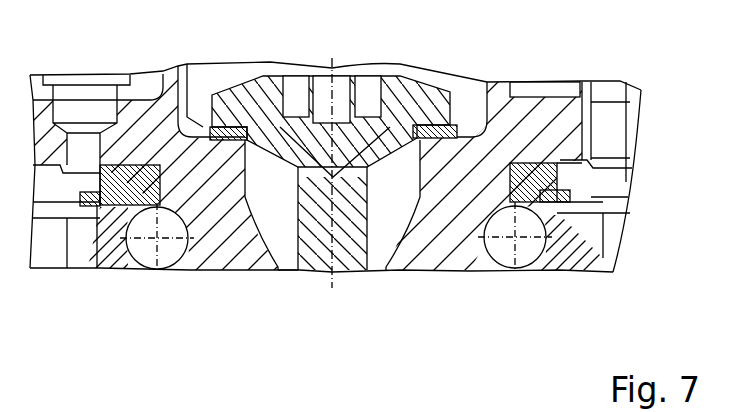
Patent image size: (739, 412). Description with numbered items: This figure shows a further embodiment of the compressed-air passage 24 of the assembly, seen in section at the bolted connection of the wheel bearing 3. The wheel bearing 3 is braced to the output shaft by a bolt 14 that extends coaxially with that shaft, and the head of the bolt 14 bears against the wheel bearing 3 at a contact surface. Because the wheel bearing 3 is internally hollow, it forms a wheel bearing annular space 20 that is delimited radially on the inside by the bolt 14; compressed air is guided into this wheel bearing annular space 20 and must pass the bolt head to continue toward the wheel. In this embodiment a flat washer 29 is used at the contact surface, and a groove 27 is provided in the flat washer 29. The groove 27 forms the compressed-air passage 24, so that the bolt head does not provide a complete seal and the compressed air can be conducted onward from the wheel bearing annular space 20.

The wheel bearing 3 is at (507, 117).
The bolt 14 is at (359, 272).
The wheel bearing annular space 20 is at (281, 232).
The compressed-air passage 24 is at (197, 12).
The groove 27 is at (238, 95).
The flat washer 29 is at (432, 124).